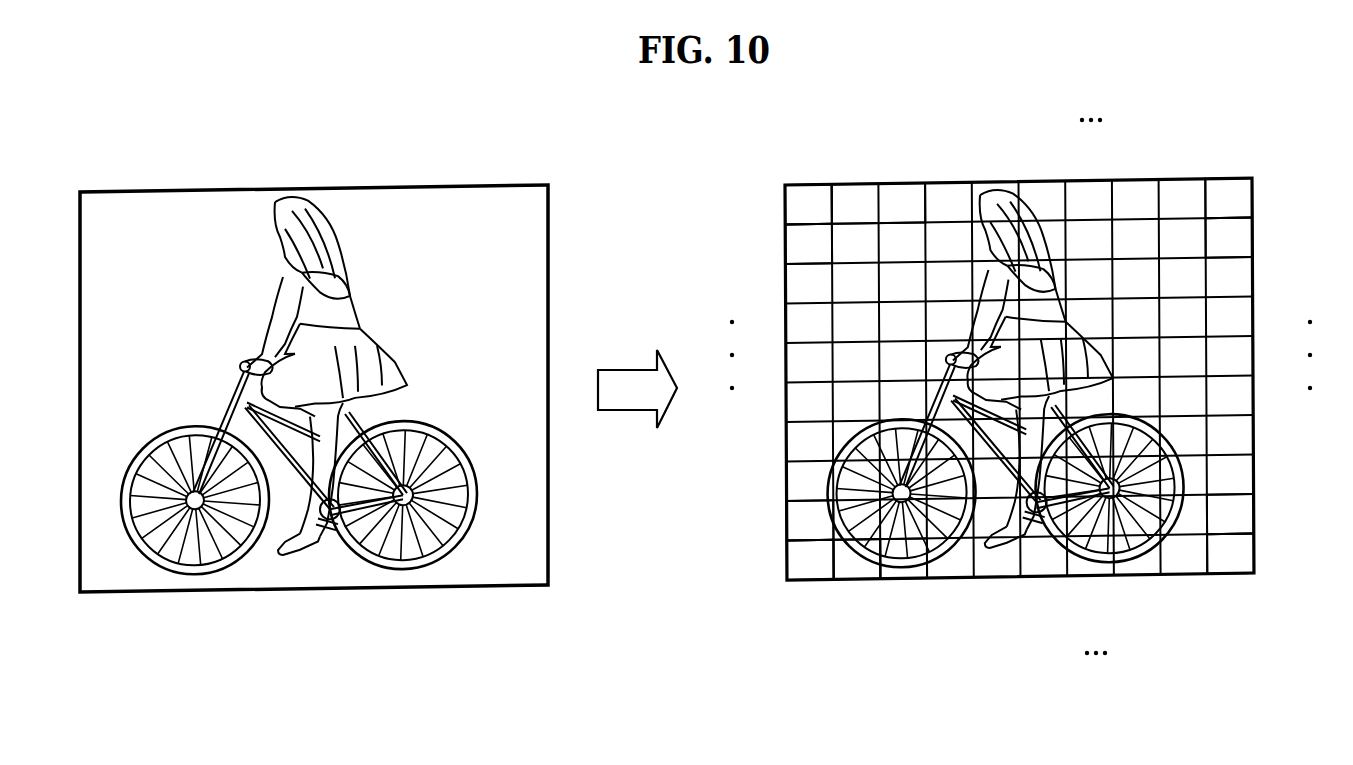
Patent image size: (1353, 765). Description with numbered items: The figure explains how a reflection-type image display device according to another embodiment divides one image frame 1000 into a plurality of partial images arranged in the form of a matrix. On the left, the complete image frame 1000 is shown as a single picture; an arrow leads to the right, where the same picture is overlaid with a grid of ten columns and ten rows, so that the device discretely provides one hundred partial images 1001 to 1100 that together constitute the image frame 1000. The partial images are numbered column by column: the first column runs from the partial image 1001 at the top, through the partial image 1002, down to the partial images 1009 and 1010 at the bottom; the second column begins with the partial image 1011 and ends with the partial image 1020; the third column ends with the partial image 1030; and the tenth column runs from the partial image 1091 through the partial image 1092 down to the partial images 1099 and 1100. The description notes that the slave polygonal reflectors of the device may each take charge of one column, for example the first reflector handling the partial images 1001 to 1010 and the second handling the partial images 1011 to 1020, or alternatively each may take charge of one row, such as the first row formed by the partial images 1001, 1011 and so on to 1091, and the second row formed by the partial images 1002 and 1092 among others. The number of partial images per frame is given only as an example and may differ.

The image frame 1000 is at (410, 187).
The partial image 1001 is at (805, 208).
The partial image 1002 is at (807, 252).
The partial image 1009 is at (802, 528).
The partial image 1010 is at (807, 565).
The partial image 1011 is at (845, 205).
The partial image 1020 is at (862, 565).
The partial image 1030 is at (927, 566).
The partial image 1091 is at (1232, 198).
The partial image 1092 is at (1228, 230).
The partial image 1099 is at (1238, 515).
The partial image 1100 is at (1237, 557).